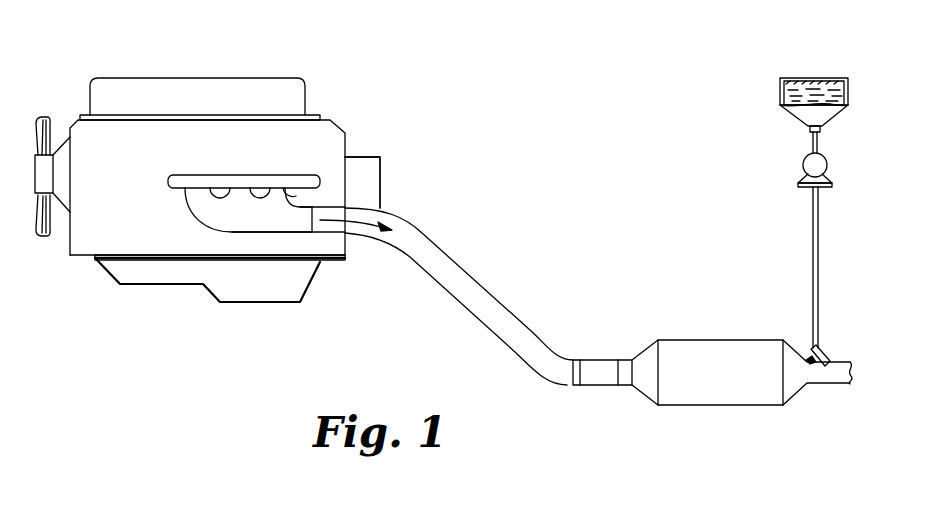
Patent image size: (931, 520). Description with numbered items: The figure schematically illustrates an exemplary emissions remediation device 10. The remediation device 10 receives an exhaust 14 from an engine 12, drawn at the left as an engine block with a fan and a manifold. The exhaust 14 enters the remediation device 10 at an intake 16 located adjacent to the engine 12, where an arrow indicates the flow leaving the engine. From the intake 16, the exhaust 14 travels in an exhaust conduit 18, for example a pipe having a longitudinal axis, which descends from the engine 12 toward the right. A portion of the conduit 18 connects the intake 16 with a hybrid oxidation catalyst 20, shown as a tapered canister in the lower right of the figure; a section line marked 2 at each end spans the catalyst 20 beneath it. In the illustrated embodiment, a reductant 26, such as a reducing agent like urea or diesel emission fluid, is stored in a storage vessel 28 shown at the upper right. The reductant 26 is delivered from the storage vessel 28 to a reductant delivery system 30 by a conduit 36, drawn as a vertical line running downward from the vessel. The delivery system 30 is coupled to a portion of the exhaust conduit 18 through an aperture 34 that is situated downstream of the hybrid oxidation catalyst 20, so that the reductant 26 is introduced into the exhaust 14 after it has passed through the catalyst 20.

The remediation device 10 is at (453, 60).
The engine 12 is at (210, 150).
The exhaust 14 is at (351, 221).
The intake 16 is at (327, 227).
The exhaust conduit 18 is at (423, 253).
The hybrid oxidation catalyst 20 is at (731, 383).
The section line 2- 2 is at (797, 412).
The reductant 26 is at (788, 112).
The storage vessel 28 is at (780, 88).
The reductant delivery system 30 is at (808, 362).
The aperture 34 is at (829, 350).
The conduit 36 is at (812, 267).